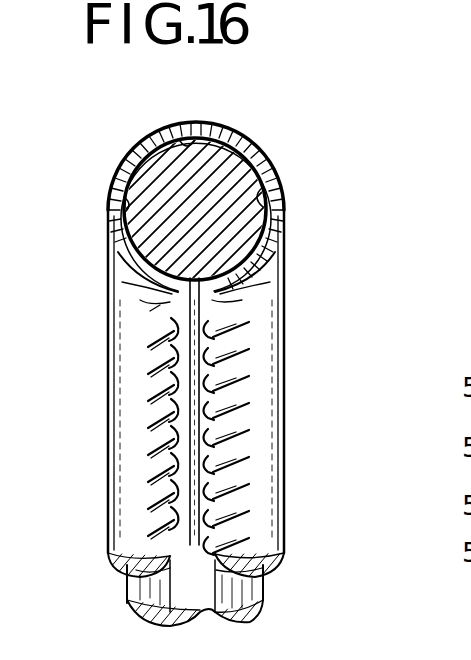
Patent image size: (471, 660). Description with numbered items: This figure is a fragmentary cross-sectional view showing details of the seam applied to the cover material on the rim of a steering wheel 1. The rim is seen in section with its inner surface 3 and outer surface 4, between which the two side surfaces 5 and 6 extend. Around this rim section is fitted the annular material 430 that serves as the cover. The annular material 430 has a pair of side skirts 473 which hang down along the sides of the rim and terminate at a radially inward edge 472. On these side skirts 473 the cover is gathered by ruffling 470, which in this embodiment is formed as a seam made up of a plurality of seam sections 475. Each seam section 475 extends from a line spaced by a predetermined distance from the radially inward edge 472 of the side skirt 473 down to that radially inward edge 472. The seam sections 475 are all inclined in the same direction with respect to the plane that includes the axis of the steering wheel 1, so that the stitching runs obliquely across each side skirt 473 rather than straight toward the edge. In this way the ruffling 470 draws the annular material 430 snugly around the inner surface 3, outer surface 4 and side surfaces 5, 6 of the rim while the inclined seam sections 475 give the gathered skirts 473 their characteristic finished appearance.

The steering wheel 1 is at (246, 151).
The inner surface 3 is at (244, 268).
The outer surface 4 is at (196, 124).
The side surface 5 is at (110, 190).
The side surface 6 is at (264, 204).
The annular material 430 is at (130, 154).
The ruffling 470 is at (150, 423).
The radially inward edge 472 is at (150, 508).
The side skirt 473 is at (148, 472).
The seam section 475 is at (178, 338).